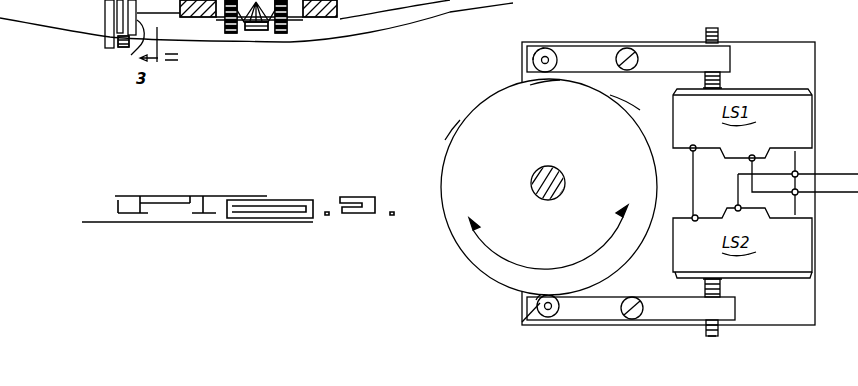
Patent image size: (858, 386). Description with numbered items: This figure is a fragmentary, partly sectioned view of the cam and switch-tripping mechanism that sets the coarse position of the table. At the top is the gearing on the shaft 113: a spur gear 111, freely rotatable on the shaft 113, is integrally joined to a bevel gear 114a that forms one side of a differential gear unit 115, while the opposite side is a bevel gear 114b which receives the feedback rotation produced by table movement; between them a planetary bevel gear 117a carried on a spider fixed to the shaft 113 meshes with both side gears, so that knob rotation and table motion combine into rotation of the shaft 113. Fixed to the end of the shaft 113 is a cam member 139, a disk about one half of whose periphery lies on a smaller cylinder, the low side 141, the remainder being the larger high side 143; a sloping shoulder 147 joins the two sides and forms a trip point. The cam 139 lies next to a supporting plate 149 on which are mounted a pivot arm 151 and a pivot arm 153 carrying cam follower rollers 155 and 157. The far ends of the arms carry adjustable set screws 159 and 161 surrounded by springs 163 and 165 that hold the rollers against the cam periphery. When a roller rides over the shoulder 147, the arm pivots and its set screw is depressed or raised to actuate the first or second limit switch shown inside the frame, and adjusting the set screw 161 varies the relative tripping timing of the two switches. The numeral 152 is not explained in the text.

The spur gear 111 is at (239, 27).
The shaft 113 is at (532, 184).
The bevel gear 114a is at (218, 8).
The bevel gear 114b is at (295, 17).
The differential gear unit 115 is at (275, 36).
The planetary bevel gear 117a is at (258, 28).
The cam member 139 is at (553, 126).
The low side 141 is at (455, 126).
The high side 143 is at (540, 77).
The sloping shoulder 147 is at (550, 298).
The supporting plate 149 is at (793, 47).
The pivot arm 151 is at (652, 53).
The nut 152 is at (134, 44).
The pivot arm 153 is at (610, 313).
The roller 155 is at (534, 55).
The roller 157 is at (538, 312).
The adjustable set screw 159 is at (715, 37).
The adjustable set screw 161 is at (720, 337).
The spring 163 is at (720, 82).
The spring 165 is at (722, 287).